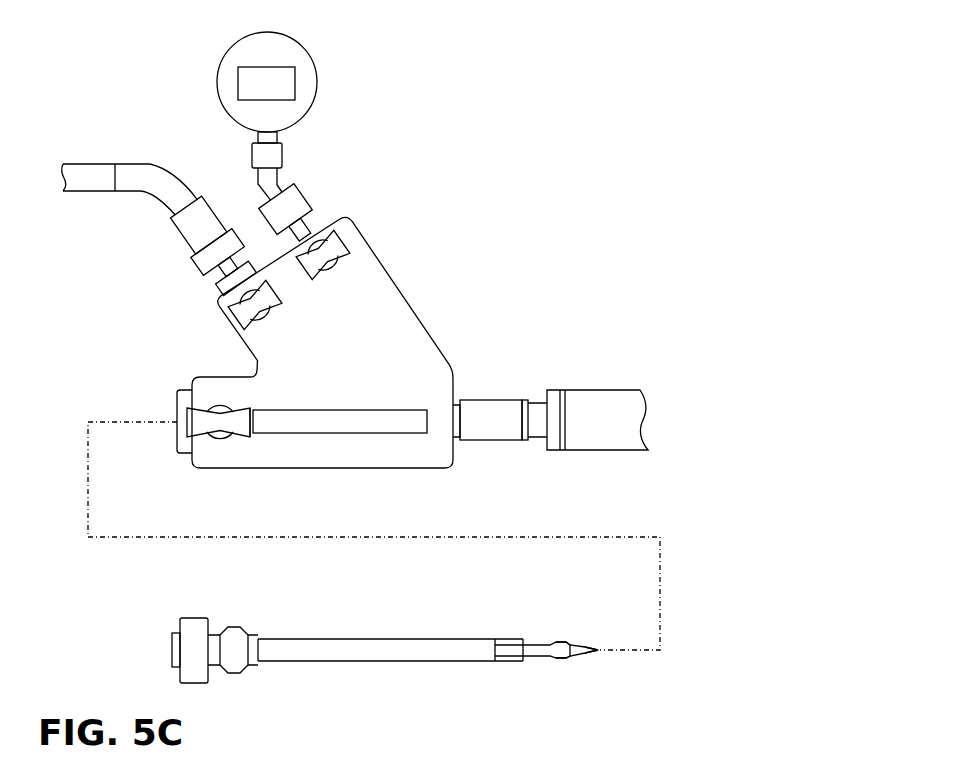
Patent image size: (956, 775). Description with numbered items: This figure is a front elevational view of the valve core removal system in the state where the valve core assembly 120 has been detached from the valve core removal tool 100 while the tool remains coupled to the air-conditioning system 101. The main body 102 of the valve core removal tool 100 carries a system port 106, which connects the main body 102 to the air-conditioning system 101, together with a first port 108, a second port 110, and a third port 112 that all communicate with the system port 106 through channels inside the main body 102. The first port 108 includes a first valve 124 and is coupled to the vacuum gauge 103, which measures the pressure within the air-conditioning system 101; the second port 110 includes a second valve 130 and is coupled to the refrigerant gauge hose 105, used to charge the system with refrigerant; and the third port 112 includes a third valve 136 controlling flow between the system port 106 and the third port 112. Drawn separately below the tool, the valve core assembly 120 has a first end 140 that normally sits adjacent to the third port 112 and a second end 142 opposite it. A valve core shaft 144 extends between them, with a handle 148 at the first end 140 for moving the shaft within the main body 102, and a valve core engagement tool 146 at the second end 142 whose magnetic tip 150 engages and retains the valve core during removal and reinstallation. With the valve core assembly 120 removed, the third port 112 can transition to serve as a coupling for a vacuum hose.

The valve core removal tool 100 is at (452, 262).
The air-conditioning system 101 is at (597, 402).
The main body 102 is at (425, 455).
The vacuum gauge 103 is at (300, 66).
The refrigerant gauge hose 105 is at (143, 172).
The system port 106 is at (490, 408).
The first port 108 is at (312, 216).
The second port 110 is at (220, 289).
The third port 112 is at (177, 444).
The valve core assembly 120 is at (395, 652).
The first valve 124 is at (336, 296).
The second valve 130 is at (276, 340).
The third valve 136 is at (245, 452).
The first end 140 is at (336, 618).
The second end 142 is at (567, 670).
The valve core shaft 144 is at (385, 640).
The valve core engagement tool 146 is at (553, 646).
The handle 148 is at (195, 630).
The magnetic tip 150 is at (594, 648).